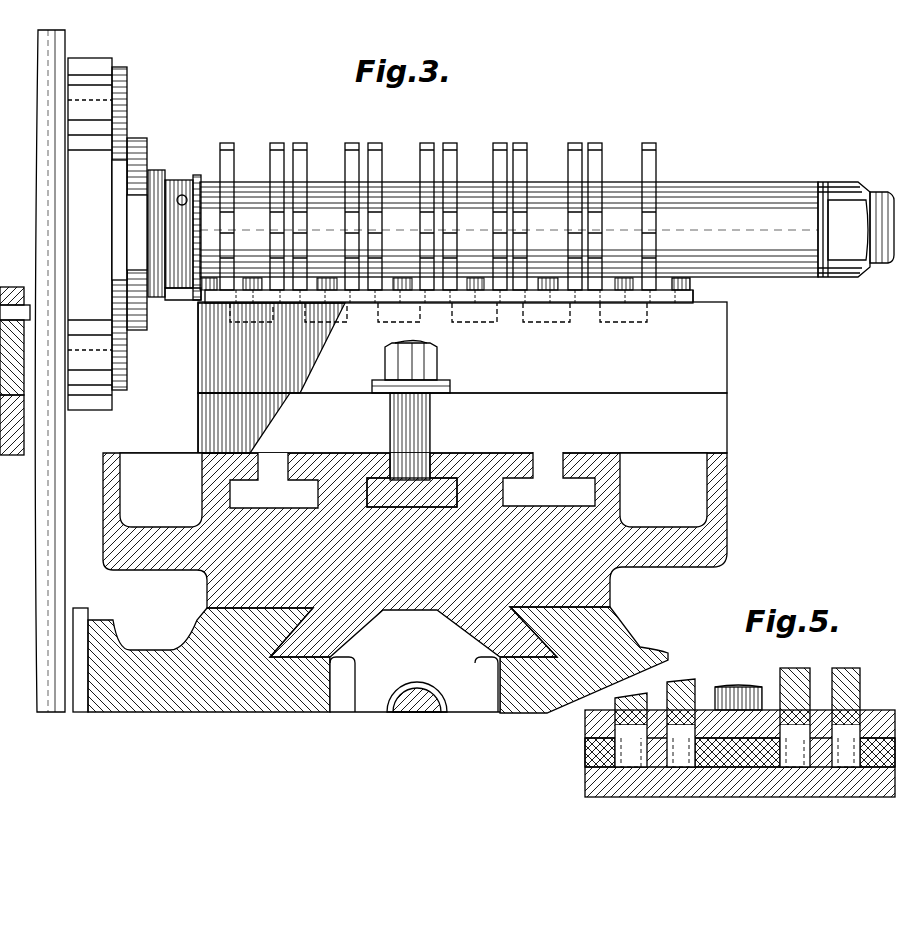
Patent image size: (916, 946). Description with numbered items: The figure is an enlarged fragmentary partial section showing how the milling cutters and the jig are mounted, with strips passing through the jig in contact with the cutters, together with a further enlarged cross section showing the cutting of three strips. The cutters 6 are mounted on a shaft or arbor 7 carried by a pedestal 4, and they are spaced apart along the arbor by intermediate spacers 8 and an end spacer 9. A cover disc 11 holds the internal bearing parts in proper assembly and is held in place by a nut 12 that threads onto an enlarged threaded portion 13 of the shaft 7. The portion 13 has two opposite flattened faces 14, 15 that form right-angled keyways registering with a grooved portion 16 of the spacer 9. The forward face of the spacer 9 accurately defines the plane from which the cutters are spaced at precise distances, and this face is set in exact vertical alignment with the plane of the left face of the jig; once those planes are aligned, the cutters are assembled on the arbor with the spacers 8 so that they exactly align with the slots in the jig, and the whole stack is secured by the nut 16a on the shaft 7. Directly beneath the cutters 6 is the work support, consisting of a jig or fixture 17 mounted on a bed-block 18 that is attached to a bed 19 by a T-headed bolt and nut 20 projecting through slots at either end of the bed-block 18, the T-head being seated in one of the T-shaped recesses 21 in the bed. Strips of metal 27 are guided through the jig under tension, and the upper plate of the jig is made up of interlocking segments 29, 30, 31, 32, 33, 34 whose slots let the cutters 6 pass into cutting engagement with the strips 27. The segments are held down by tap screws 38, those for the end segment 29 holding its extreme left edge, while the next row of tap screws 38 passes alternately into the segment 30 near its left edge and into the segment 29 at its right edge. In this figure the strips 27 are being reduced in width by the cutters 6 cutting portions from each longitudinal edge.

In FIG. 3, the pedestal 4 is at (66, 447).
In FIG. 3, the cutters 6 is at (657, 160).
In FIG. 5, the cutters 6 is at (647, 697).
In FIG. 3, the shaft 7 is at (882, 192).
In FIG. 3, the intermediate spacers 8 is at (241, 183).
In FIG. 3, the end spacer 9 is at (172, 178).
In FIG. 3, the cover disc 11 is at (121, 66).
In FIG. 3, the nut 12 is at (137, 140).
In FIG. 3, the enlarged threaded portion 13 is at (157, 175).
In FIG. 3, the flattened face 14 is at (183, 195).
In FIG. 3, the flattened face 15 is at (177, 300).
In FIG. 3, the grooved portion 16 is at (197, 178).
In FIG. 3, the nut 16a is at (834, 183).
In FIG. 3, the jig 17 is at (728, 332).
In FIG. 5, the jig 17 is at (595, 782).
In FIG. 3, the bed-block 18 is at (728, 418).
In FIG. 3, the bed 19 is at (728, 502).
In FIG. 3, the T-headed bolt and nut 20 is at (410, 433).
In FIG. 3, the T-shaped recesses 21 is at (262, 478).
In FIG. 3, the strips of metal 27 is at (630, 322).
In FIG. 5, the strips of metal 27 is at (597, 752).
In FIG. 3, the end segment 29 is at (215, 303).
In FIG. 3, the intermediate segment 30 is at (330, 303).
In FIG. 3, the intermediate segment 31 is at (410, 303).
In FIG. 3, the intermediate segment 32 is at (478, 303).
In FIG. 3, the intermediate segment 33 is at (550, 303).
In FIG. 3, the end segment 34 is at (670, 303).
In FIG. 3, the tap screws 38 is at (691, 283).
In FIG. 5, the tap screws 38 is at (728, 686).